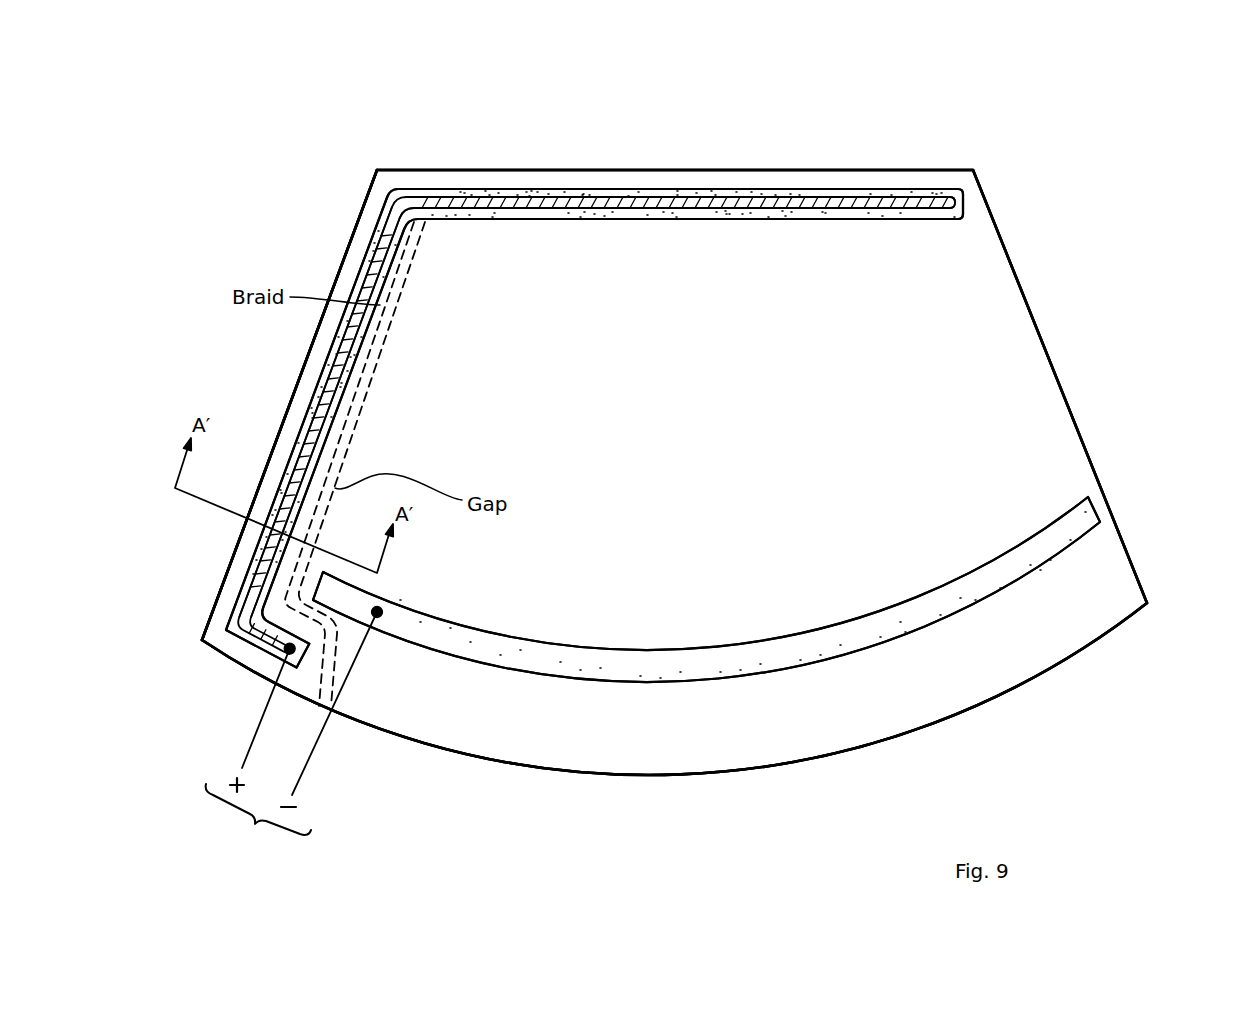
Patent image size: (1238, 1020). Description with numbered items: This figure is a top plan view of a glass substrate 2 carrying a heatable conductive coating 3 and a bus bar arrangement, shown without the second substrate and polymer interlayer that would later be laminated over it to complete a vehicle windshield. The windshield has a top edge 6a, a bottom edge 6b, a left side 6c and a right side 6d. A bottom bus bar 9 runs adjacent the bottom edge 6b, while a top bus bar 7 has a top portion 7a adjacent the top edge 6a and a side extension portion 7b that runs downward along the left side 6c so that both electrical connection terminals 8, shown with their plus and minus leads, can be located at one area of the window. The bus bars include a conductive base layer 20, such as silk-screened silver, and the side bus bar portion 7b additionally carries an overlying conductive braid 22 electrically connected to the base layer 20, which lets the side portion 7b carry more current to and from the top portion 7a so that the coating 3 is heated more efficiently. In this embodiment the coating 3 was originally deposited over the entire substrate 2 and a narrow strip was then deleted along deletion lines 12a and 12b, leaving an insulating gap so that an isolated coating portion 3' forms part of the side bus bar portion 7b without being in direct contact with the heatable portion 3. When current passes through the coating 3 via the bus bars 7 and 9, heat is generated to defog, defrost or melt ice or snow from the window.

The first glass substrate 2 is at (1088, 444).
The heatable coating 3 is at (700, 472).
The bus bar portion of coating 3' is at (258, 405).
The top edge 6a is at (852, 170).
The bottom edge 6b is at (892, 740).
The left side 6c is at (310, 368).
The right side 6d is at (1016, 272).
The top bus bar 7 is at (290, 435).
The top portion of bus bar 7a is at (653, 197).
The side bus bar portion 7b is at (302, 405).
The electrical connection terminals 8 is at (247, 828).
The bottom bus bar 9 is at (718, 660).
The deletion line 12a is at (362, 395).
The deletion line 12b is at (360, 447).
The conductive base layer 20 is at (842, 218).
The conductive braid 22 is at (903, 210).